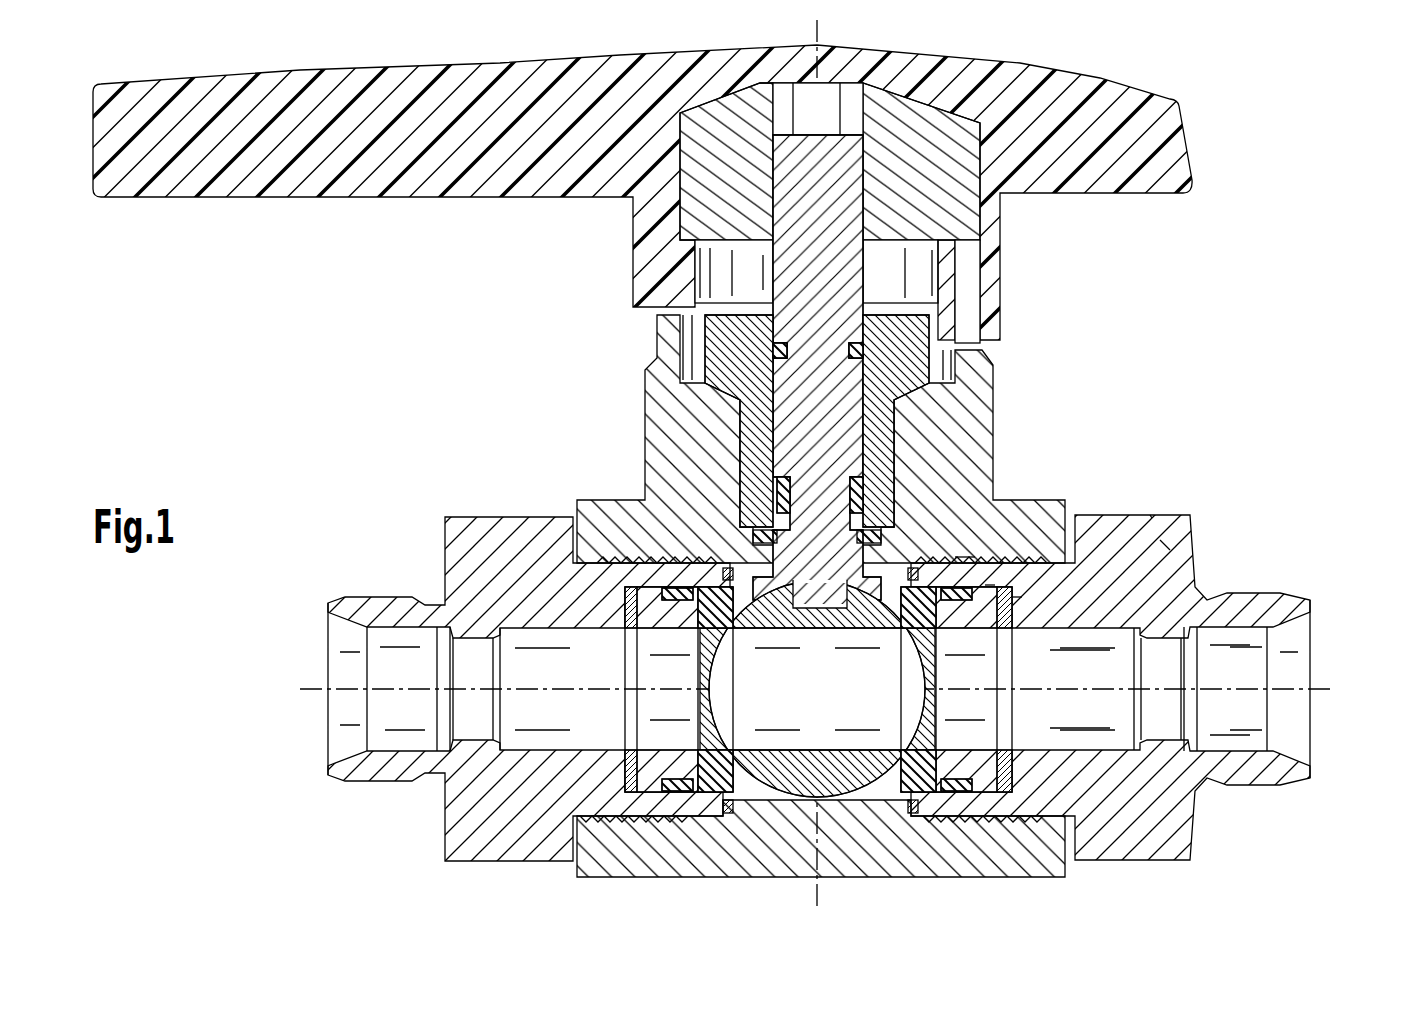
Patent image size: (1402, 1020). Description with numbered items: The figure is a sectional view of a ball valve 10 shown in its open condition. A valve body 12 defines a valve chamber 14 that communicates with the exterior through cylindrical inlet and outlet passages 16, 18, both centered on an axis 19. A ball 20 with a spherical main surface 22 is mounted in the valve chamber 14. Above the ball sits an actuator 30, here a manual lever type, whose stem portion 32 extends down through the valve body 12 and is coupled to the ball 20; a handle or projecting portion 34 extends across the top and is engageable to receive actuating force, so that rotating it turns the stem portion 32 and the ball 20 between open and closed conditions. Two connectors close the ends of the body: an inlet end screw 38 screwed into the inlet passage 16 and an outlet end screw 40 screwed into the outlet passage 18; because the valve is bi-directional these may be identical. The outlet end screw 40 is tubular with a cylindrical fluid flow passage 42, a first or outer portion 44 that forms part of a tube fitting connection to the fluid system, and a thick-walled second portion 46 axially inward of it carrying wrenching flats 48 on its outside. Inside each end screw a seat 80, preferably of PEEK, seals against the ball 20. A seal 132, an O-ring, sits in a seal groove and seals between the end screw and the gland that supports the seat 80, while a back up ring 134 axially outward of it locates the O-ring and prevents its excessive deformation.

The ball valve 10 is at (267, 618).
The valve body 12 is at (640, 395).
The valve chamber 14 is at (768, 585).
The inlet passage 16 is at (643, 813).
The outlet passage 18 is at (975, 555).
The axis 19 is at (328, 689).
The ball 20 is at (781, 790).
The spherical main surface 22 is at (858, 782).
The actuator 30 is at (1022, 270).
The stem portion 32 is at (830, 400).
The handle or projecting portion 34 is at (1133, 197).
The inlet end screw 38 is at (445, 532).
The outlet end screw 40 is at (1135, 860).
The cylindrical fluid flow passage 42 is at (1317, 658).
The first or outer portion 44 is at (1303, 600).
The second portion 46 is at (1170, 550).
The wrenching flats 48 is at (1150, 515).
The seat 80 is at (933, 782).
The seal 132 is at (957, 782).
The back up ring 134 is at (977, 782).